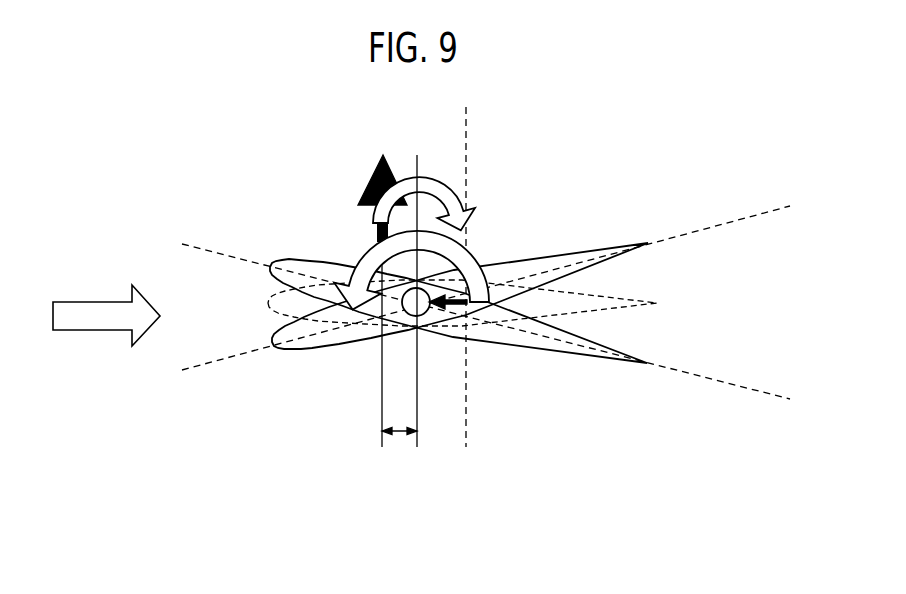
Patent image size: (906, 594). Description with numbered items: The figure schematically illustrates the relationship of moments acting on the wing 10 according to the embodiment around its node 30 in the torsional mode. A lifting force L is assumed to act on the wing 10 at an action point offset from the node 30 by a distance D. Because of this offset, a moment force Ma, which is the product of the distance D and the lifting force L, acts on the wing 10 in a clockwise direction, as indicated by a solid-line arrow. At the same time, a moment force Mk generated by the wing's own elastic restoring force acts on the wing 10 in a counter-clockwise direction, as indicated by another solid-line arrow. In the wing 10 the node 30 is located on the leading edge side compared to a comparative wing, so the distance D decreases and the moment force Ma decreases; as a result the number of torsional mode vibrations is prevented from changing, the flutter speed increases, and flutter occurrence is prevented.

The wing 10 is at (647, 217).
The node 30 is at (417, 303).
The lifting force L is at (370, 177).
The moment force Ma is at (452, 186).
The moment force Mk is at (473, 249).
The distance D is at (400, 433).